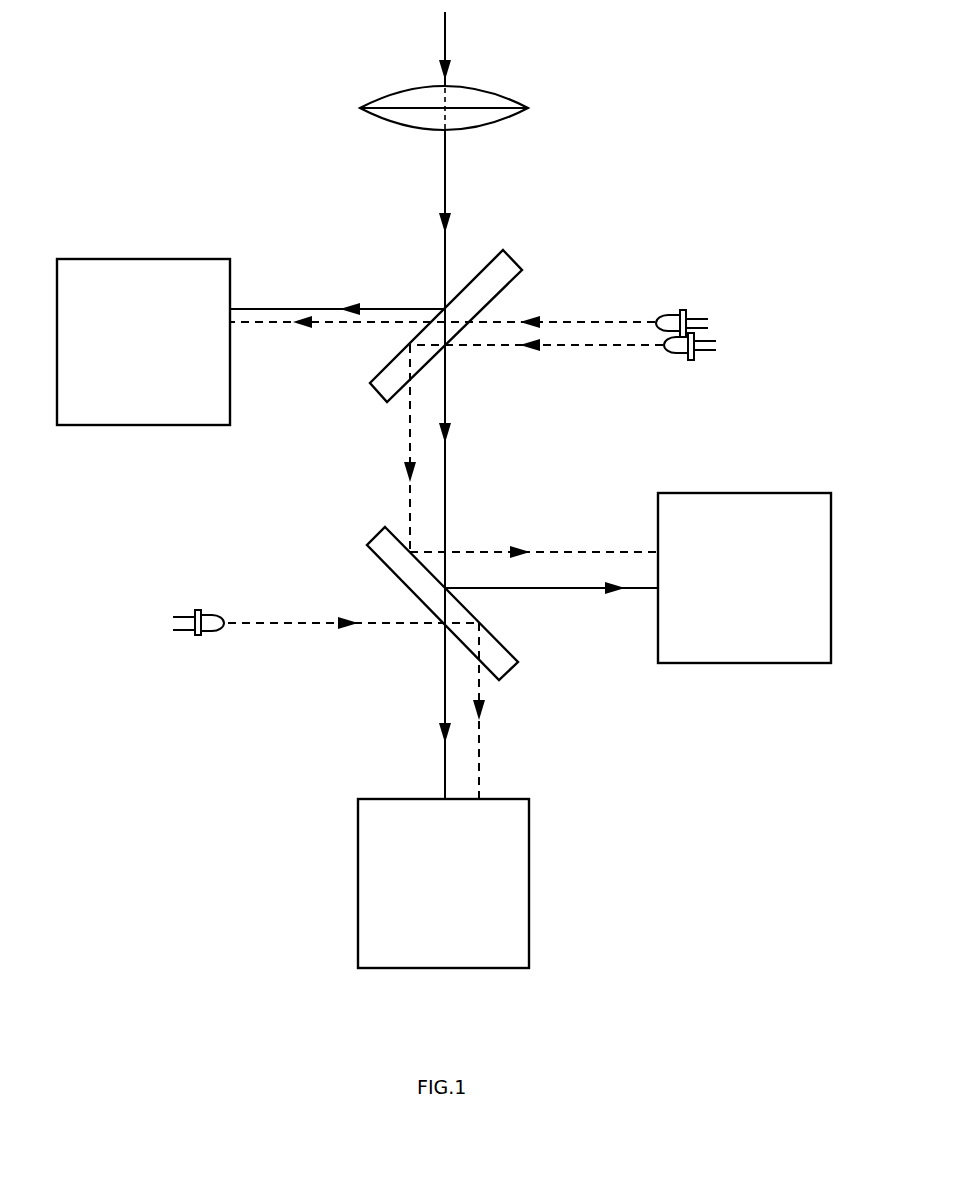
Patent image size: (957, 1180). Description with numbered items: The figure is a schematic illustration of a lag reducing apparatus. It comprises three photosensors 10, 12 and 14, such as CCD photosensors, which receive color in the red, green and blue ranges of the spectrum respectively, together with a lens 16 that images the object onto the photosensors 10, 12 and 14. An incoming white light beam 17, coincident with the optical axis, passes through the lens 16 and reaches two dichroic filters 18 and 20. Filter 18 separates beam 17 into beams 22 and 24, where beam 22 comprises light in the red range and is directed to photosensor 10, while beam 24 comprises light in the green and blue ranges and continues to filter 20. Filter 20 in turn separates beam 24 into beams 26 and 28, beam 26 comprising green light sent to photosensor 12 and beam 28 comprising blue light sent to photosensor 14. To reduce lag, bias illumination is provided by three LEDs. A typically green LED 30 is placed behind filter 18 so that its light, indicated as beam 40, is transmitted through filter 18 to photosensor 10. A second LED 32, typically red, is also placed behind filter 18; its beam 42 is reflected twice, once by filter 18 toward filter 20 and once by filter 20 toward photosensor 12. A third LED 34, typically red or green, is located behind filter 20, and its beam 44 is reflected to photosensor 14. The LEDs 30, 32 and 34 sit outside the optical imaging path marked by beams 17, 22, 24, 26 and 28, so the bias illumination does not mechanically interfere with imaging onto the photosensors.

The photosensor 10 is at (127, 257).
The photosensor 12 is at (832, 600).
The photosensor 14 is at (530, 903).
The lens 16 is at (500, 93).
The incoming white light beam 17 is at (447, 188).
The dichroic filter 18 is at (515, 253).
The dichroic filter 20 is at (378, 558).
The beam 22 is at (295, 307).
The beam 24 is at (447, 412).
The beam 26 is at (590, 590).
The beam 28 is at (442, 695).
The green LED 30 is at (680, 315).
The second LED 32 is at (687, 358).
The third LED 34 is at (210, 633).
The beam 40 is at (550, 322).
The light beam 42 is at (602, 347).
The beam 44 is at (298, 625).